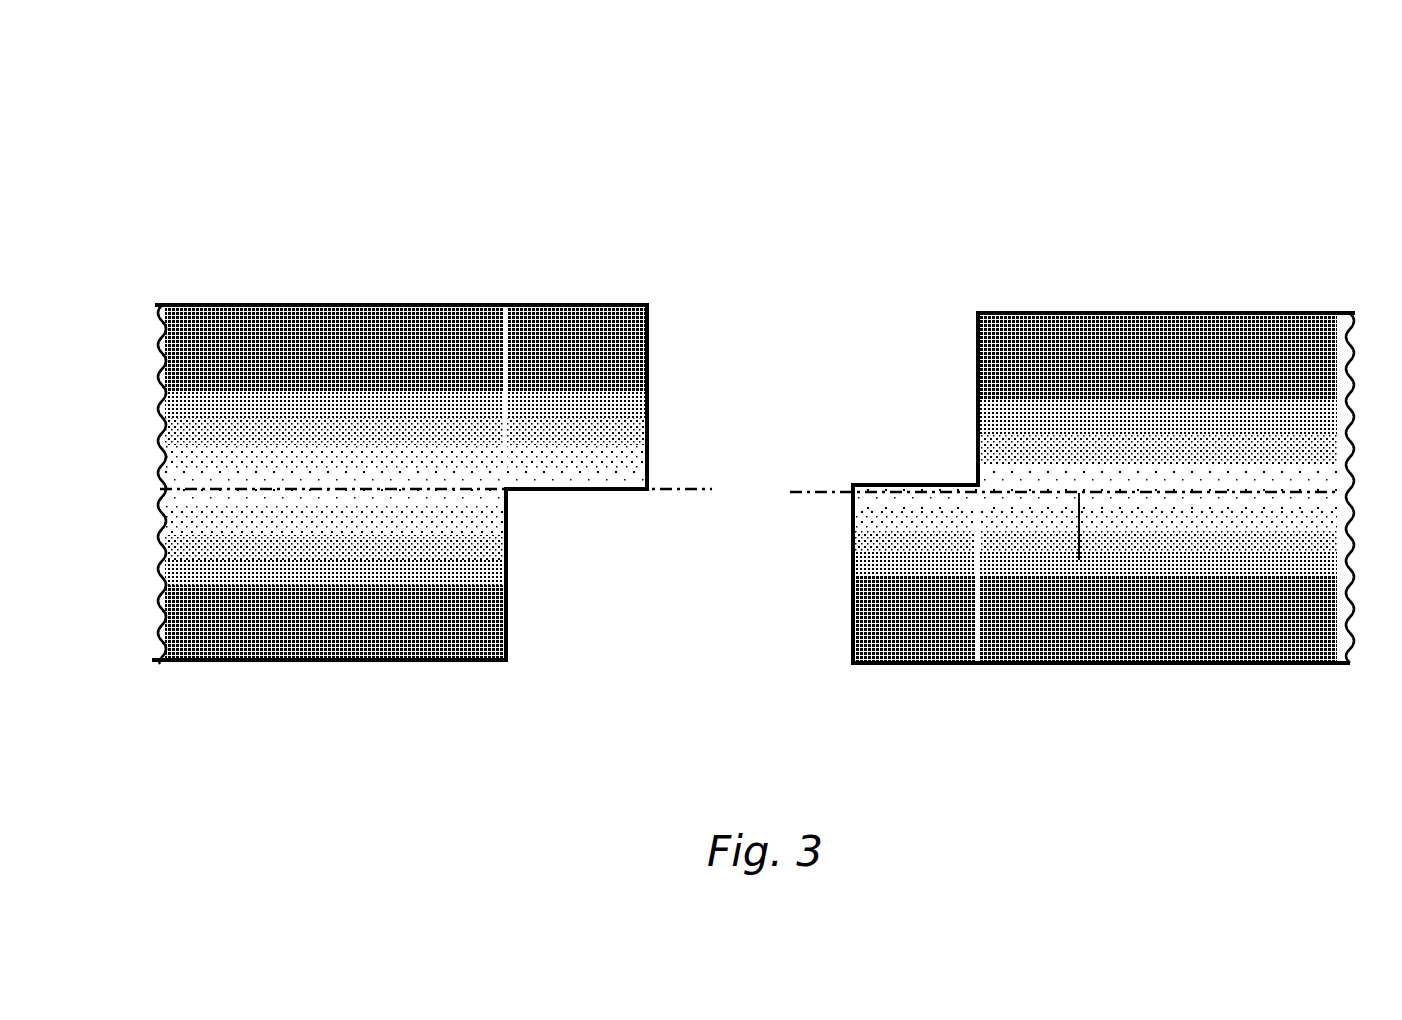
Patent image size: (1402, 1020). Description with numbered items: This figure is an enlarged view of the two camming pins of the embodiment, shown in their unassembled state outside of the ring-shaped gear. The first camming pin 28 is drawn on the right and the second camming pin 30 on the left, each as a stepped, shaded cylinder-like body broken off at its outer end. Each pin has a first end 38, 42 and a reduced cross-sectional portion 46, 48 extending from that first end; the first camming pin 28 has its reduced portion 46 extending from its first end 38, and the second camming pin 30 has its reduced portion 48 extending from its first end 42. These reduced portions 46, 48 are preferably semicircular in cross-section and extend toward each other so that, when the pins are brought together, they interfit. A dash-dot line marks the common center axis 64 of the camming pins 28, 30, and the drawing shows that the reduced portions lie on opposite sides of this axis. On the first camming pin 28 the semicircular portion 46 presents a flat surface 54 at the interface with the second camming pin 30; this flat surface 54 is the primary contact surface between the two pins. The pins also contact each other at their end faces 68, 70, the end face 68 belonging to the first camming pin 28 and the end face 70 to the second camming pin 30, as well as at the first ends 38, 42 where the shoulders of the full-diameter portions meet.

The first camming pin 28 is at (1112, 276).
The second camming pin 30 is at (338, 274).
The first end of first camming pin 38 is at (975, 365).
The first end of second camming pin 42 is at (507, 625).
The reduced cross-sectional portion of first camming pin 46 is at (905, 617).
The reduced cross-sectional portion of second camming pin 48 is at (597, 350).
The flat surface 54 is at (892, 485).
The center axis 64 is at (1086, 663).
The end face of first camming pin 68 is at (853, 565).
The end face of second camming pin 70 is at (648, 370).